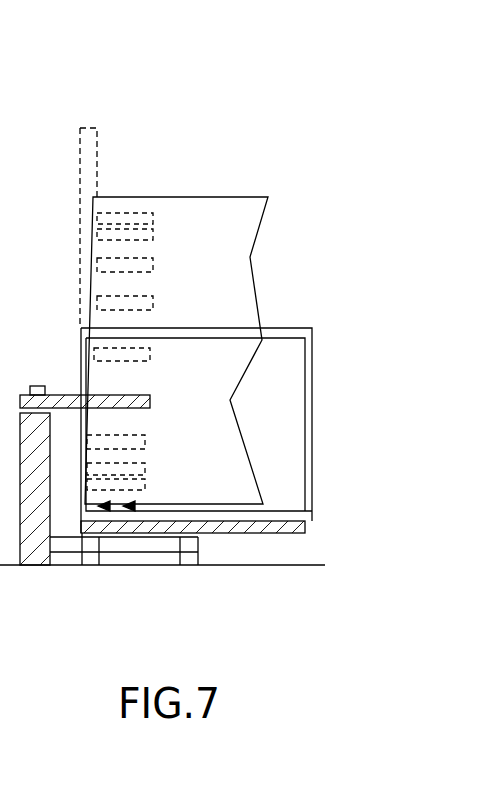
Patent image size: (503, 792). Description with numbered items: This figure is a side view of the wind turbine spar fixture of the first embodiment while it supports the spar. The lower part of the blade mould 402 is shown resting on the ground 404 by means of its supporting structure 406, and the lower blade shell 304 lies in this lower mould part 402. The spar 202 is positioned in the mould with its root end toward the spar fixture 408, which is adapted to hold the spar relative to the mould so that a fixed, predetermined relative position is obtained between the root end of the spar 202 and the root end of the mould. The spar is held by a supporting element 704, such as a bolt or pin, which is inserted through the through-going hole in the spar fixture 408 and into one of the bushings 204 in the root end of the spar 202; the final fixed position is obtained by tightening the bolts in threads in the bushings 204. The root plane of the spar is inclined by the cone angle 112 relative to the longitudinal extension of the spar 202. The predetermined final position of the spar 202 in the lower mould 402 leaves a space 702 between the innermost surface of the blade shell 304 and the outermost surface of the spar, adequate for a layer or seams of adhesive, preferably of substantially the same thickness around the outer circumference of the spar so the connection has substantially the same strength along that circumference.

The cone angle 112 is at (87, 127).
The WT spar 202 is at (222, 197).
The root bushings 204 is at (145, 215).
The lower WT blade shell 304 is at (302, 329).
The lower part of WT blade mould 402 is at (305, 420).
The ground 404 is at (160, 567).
The supporting structure 406 is at (97, 565).
The spar fixture 408 is at (37, 545).
The space 702 is at (110, 506).
The supporting element 704 is at (62, 392).